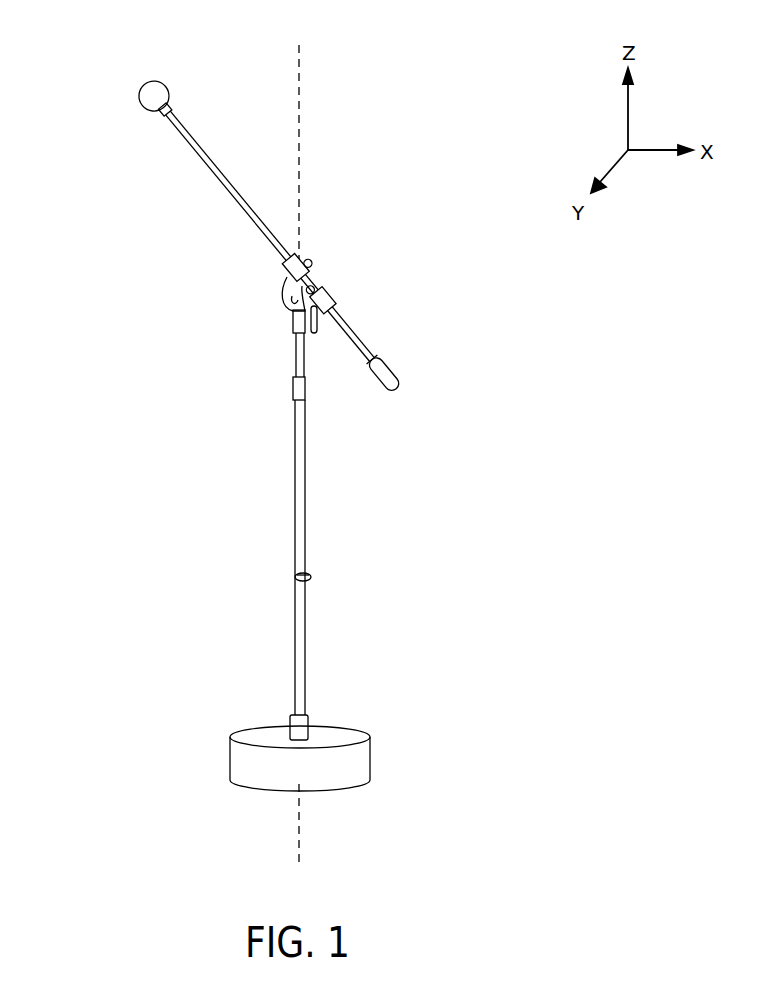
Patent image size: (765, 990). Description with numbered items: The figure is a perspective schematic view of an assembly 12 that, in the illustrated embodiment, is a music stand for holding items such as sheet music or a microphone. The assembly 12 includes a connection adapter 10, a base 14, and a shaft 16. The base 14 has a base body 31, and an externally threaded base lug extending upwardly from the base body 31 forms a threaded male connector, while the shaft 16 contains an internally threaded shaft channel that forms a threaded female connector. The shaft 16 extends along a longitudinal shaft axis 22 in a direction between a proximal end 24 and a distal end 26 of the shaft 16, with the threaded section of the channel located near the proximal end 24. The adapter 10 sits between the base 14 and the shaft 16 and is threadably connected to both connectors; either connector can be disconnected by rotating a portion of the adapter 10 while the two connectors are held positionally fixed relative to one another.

The assembly 12 is at (94, 333).
The longitudinal shaft axis 22 is at (300, 140).
The distal end 26 is at (306, 352).
The shaft 16 is at (246, 556).
The proximal end 24 is at (306, 699).
The connection adapter 10 is at (310, 721).
The base 14 is at (279, 758).
The base body 31 is at (363, 770).